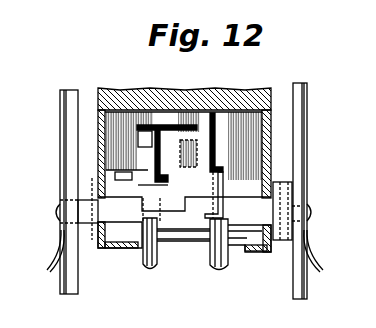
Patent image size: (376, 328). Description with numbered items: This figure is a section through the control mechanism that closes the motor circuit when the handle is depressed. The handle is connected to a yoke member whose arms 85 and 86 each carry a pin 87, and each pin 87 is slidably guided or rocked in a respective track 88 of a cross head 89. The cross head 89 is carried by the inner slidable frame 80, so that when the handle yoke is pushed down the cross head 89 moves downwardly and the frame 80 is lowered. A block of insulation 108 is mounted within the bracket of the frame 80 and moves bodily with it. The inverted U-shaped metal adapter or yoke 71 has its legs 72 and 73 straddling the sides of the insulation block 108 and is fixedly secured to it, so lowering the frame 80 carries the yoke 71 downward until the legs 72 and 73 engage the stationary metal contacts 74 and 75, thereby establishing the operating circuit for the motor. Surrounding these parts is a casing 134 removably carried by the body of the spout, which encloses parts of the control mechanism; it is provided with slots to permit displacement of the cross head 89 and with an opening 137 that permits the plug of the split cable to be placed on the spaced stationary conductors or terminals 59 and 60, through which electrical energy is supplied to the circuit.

The leg of yoke 72 is at (141, 110).
The stationary metal contact 74 is at (170, 128).
The yoke 71 is at (177, 110).
The stationary metal contact 75 is at (190, 137).
The leg of yoke 73 is at (216, 148).
The block of insulation 108 is at (218, 196).
The arm of yoke member 85 is at (68, 128).
The arm of yoke member 86 is at (297, 129).
The pin 87 is at (90, 207).
The track 88 is at (64, 232).
The inner slidable frame 80 is at (258, 227).
The stationary terminal conductor 59 is at (140, 262).
The casing 134 is at (265, 254).
The cross head 89 is at (163, 262).
The stationary terminal conductor 60 is at (226, 262).
The opening 137 is at (172, 232).